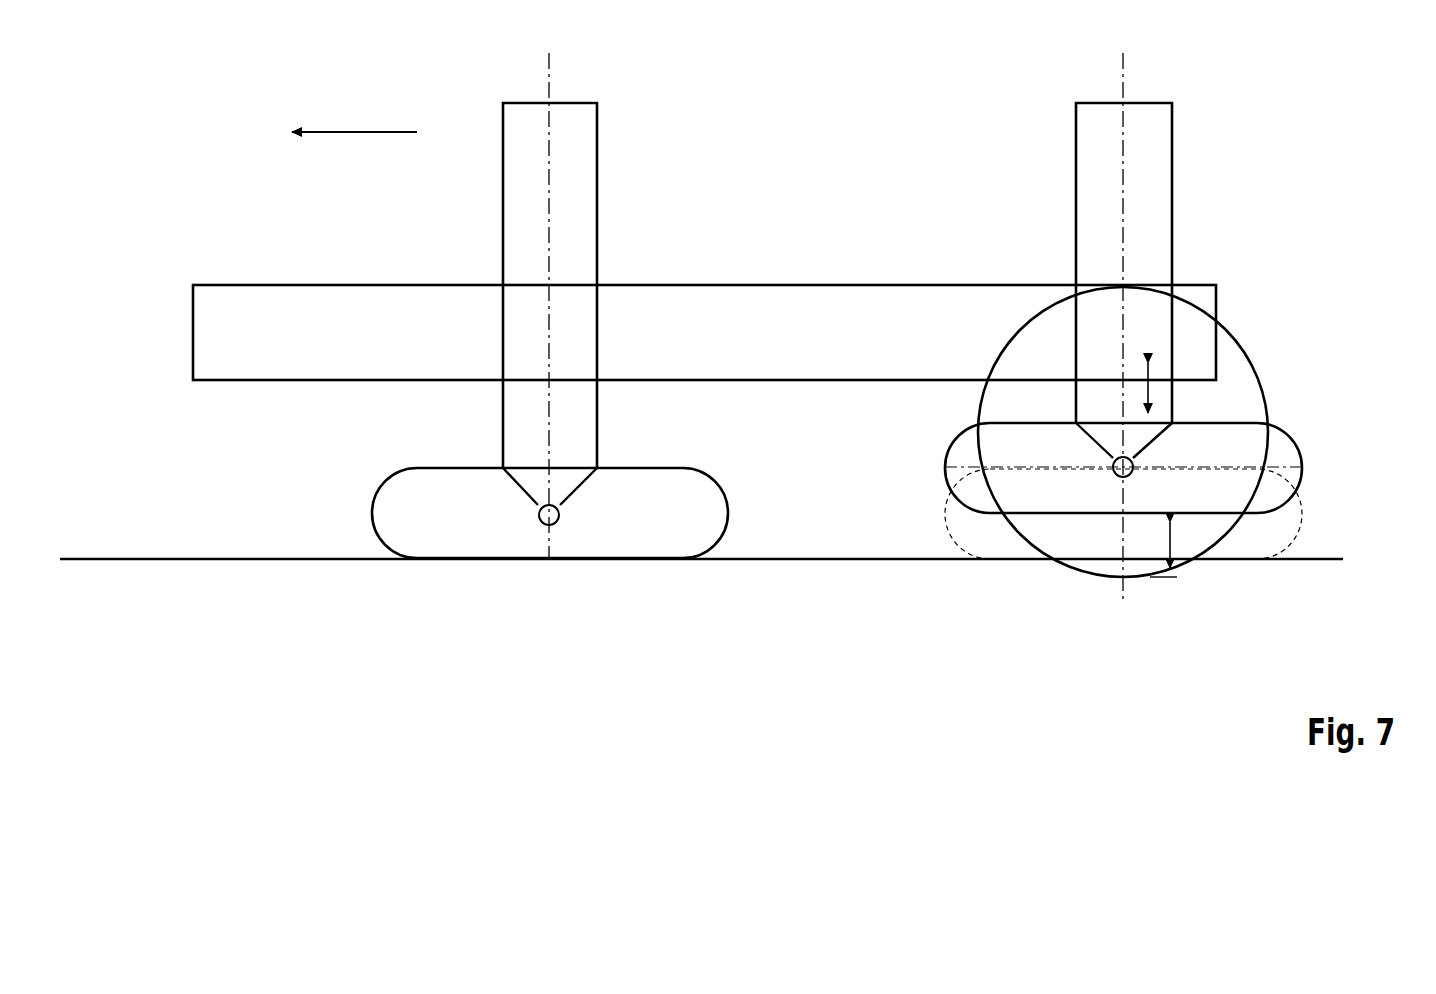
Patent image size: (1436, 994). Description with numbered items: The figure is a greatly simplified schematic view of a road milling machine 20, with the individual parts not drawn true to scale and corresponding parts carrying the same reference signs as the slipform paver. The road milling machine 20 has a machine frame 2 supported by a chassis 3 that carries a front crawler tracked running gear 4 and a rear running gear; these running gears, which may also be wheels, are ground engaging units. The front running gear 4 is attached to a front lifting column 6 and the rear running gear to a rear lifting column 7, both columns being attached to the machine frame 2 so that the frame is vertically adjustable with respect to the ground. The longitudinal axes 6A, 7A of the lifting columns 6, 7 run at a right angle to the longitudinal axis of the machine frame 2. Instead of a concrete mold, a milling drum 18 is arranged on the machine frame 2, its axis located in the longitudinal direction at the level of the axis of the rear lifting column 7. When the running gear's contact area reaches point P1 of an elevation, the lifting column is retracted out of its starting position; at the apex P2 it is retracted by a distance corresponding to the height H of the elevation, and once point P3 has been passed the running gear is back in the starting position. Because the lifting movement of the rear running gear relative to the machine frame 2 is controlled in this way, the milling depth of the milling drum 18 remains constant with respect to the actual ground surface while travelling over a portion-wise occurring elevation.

The machine frame 2 is at (885, 262).
The chassis 3 is at (666, 458).
The front crawler tracked running gear 4 is at (729, 514).
The front lifting column 6 is at (598, 157).
The longitudinal axis of the front lifting column 6A is at (551, 68).
The rear lifting column 7 is at (1173, 157).
The longitudinal axis of the rear lifting column 7A is at (1126, 68).
The milling drum 18 is at (1266, 371).
The road milling machine 20 is at (972, 62).
The height of the elevation H is at (1172, 540).
The point P1 is at (1223, 530).
The apex P2 is at (1123, 617).
The point P3 is at (1025, 530).